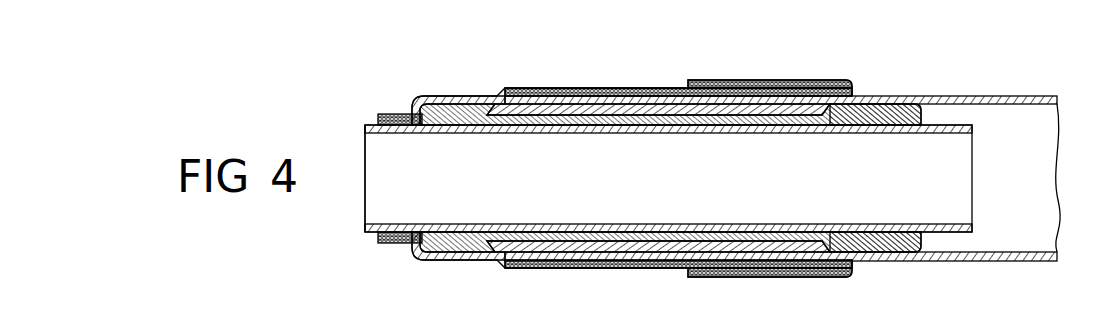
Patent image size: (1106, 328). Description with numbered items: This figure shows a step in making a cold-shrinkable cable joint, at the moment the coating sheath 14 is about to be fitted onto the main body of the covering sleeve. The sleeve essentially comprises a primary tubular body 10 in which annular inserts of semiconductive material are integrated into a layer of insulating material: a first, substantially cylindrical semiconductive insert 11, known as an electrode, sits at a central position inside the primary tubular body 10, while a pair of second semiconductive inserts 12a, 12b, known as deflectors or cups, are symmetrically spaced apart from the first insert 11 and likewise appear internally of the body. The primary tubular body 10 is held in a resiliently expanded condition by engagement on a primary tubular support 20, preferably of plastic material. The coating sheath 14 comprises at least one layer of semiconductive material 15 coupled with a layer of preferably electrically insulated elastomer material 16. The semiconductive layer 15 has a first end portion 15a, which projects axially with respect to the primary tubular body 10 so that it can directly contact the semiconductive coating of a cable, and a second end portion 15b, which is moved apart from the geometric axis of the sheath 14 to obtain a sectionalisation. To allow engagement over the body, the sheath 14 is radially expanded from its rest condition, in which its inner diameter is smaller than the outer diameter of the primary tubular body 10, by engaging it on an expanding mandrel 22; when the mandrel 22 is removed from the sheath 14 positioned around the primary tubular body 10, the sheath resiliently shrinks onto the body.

The primary tubular body 10 is at (943, 243).
The first semiconductive insert 11 is at (588, 103).
The second semiconductive insert 12a is at (452, 97).
The second semiconductive insert 12b is at (887, 97).
The coating sheath 14 is at (378, 239).
The layer of semiconductive material 15 is at (547, 268).
The first end portion 15a is at (383, 114).
The second end portion 15b is at (745, 80).
The layer of elastomer material 16 is at (647, 88).
The primary tubular support 20 is at (962, 96).
The expanding mandrel 22 is at (1022, 96).